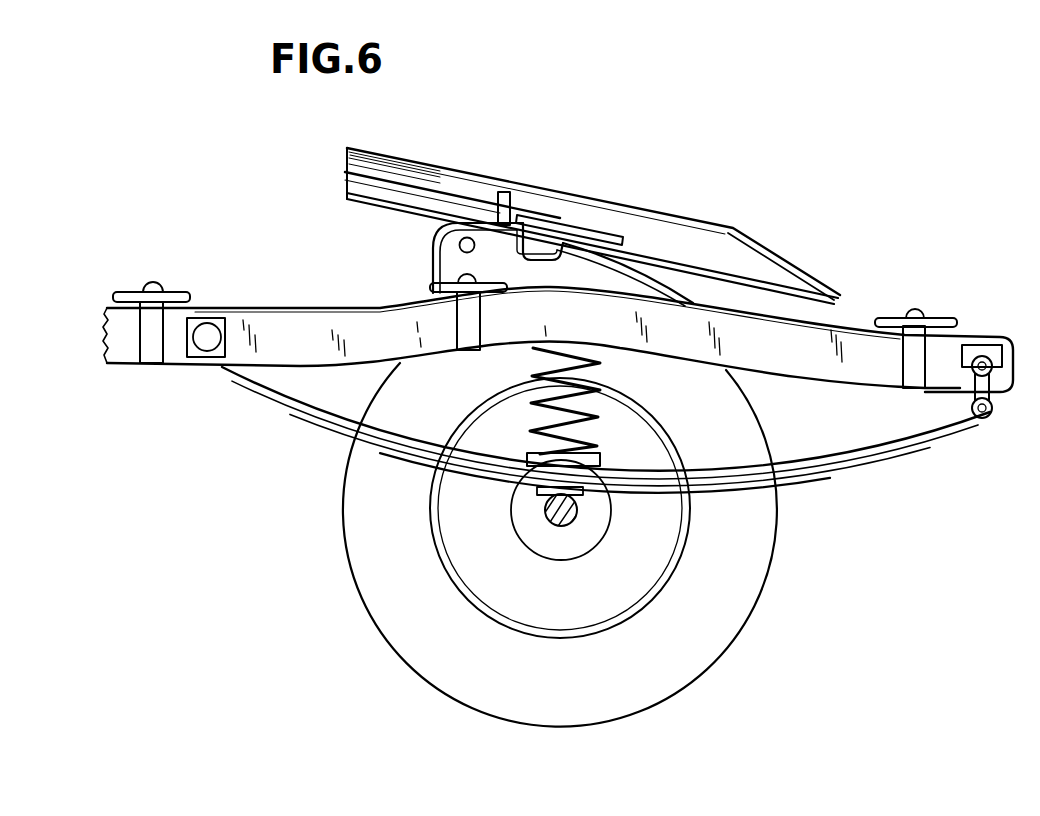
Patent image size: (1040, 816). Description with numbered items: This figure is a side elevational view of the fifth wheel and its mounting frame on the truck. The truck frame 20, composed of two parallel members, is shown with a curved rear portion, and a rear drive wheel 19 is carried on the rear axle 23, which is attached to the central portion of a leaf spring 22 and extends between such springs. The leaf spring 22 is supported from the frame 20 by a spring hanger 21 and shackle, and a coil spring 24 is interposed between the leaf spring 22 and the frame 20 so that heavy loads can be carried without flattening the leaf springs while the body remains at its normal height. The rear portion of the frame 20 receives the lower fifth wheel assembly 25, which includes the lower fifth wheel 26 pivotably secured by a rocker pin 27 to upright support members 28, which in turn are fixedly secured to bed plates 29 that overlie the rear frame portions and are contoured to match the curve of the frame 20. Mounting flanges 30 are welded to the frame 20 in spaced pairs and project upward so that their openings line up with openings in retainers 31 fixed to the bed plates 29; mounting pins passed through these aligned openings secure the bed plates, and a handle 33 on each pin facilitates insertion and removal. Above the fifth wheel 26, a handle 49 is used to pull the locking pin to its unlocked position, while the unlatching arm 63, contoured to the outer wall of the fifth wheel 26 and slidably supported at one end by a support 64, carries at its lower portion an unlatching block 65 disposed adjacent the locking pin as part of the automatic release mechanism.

The rear drive wheels 19 is at (436, 648).
The frame 20 is at (173, 347).
The spring hangers 21 is at (972, 398).
The leaf springs 22 is at (833, 471).
The rear axle 23 is at (556, 520).
The coil springs 24 is at (601, 420).
The lower fifth wheel assembly 25 is at (592, 214).
The lower fifth wheel 26 is at (733, 228).
The rocker pin 27 is at (440, 242).
The upright support members 28 is at (455, 268).
The bed plates 29 is at (313, 308).
The mounting flanges 30 is at (146, 352).
The retainers 31 is at (158, 290).
The handle 33 is at (192, 296).
The handle 49 is at (567, 217).
The unlatching arm 63 is at (440, 191).
The support 64 is at (511, 200).
The unlatching block 65 is at (563, 256).